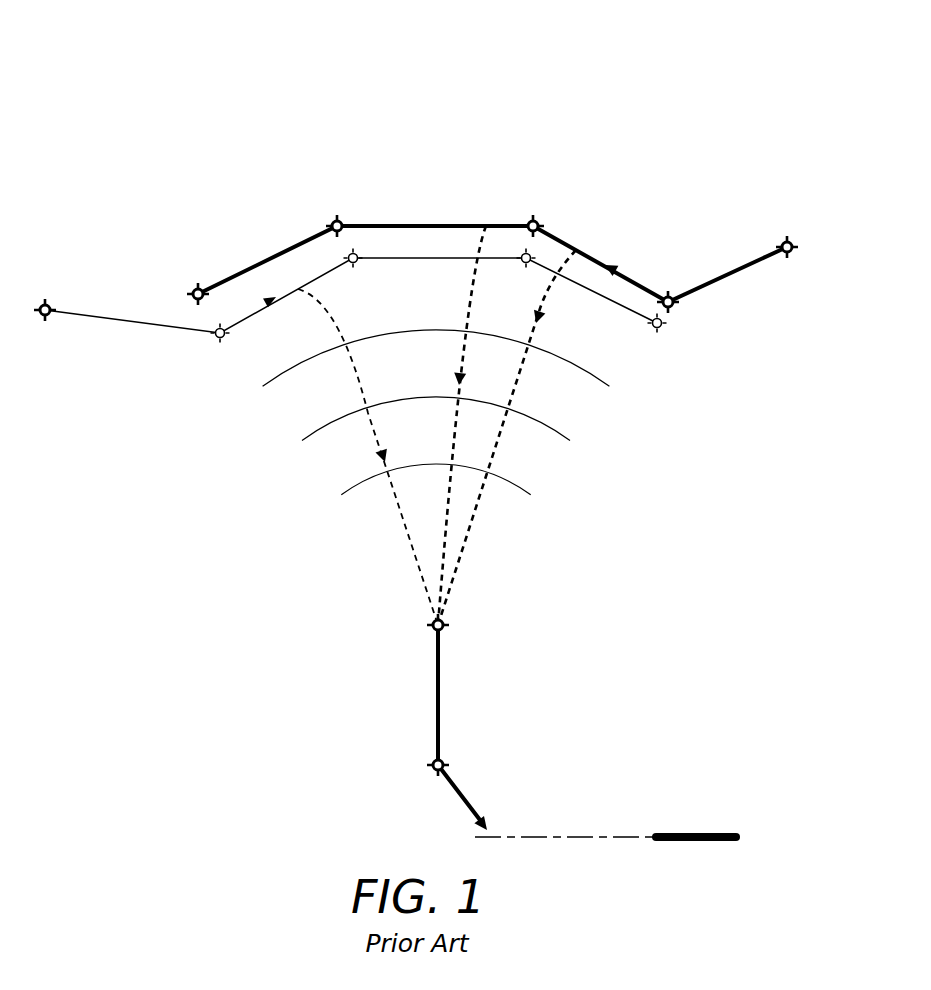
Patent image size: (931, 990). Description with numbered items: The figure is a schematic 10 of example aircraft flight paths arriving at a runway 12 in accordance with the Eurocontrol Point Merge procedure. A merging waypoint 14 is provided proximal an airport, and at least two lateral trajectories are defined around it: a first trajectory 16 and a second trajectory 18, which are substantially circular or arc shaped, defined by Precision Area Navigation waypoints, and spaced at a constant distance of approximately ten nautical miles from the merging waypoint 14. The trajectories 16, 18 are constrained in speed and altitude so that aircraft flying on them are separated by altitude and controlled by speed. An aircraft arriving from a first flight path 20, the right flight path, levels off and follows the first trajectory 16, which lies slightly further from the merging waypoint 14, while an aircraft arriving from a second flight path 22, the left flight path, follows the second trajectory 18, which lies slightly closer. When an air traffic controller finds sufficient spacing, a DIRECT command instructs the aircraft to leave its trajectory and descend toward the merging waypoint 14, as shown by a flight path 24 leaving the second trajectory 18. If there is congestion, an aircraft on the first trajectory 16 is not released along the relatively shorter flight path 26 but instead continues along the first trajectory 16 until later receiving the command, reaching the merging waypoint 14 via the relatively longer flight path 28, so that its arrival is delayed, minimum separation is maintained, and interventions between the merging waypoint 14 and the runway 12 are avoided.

The schematic 10 is at (490, 56).
The runway 12 is at (694, 830).
The merging waypoint 14 is at (462, 625).
The first trajectory 16 is at (409, 222).
The second trajectory 18 is at (620, 310).
The first flight path 20 is at (787, 236).
The second flight path 22 is at (45, 300).
The flight path 24 is at (368, 443).
The flight path 26 is at (520, 390).
The flight path 28 is at (473, 432).